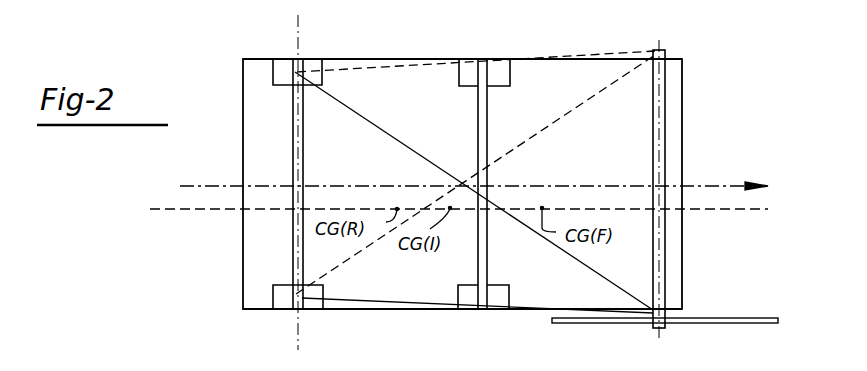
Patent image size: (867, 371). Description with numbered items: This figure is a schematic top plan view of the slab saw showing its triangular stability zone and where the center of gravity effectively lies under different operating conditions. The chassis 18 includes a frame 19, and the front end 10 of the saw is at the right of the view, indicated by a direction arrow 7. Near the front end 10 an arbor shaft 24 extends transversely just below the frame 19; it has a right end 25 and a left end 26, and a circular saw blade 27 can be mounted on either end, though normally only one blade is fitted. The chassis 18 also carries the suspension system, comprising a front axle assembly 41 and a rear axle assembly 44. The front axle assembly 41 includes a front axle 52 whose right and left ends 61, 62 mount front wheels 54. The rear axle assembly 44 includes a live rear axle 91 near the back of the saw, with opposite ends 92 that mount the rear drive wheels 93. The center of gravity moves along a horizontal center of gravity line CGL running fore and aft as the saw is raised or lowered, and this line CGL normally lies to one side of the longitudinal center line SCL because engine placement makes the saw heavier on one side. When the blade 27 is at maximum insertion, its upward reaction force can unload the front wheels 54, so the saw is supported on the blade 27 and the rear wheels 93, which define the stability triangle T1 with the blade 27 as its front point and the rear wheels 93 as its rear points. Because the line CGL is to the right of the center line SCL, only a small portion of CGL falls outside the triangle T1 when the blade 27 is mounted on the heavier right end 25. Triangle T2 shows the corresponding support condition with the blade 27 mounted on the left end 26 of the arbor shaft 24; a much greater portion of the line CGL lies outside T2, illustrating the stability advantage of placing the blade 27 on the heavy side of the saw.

The direction of travel arrow 7 is at (738, 186).
The front end 10 is at (684, 118).
The chassis 18 is at (243, 59).
The frame 19 is at (243, 309).
The arbor shaft 24 is at (651, 159).
The right end of arbor shaft 25 is at (655, 330).
The left end of arbor shaft 26 is at (656, 50).
The circular saw blade 27 is at (770, 323).
The front axle assembly 41 is at (459, 88).
The rear axle assembly 44 is at (321, 66).
The front axle 52 is at (476, 118).
The front wheels 54 is at (509, 298).
The right end of front axle 61 is at (487, 272).
The left end of front axle 62 is at (490, 101).
The live rear axle 91 is at (305, 167).
The opposite ends of rear axle 92 is at (305, 92).
The rear drive wheels 93 is at (289, 86).
The longitudinal center line SCL is at (712, 186).
The center of gravity line CGL is at (705, 212).
The stability triangle T1 is at (612, 285).
The triangle T2 is at (608, 87).